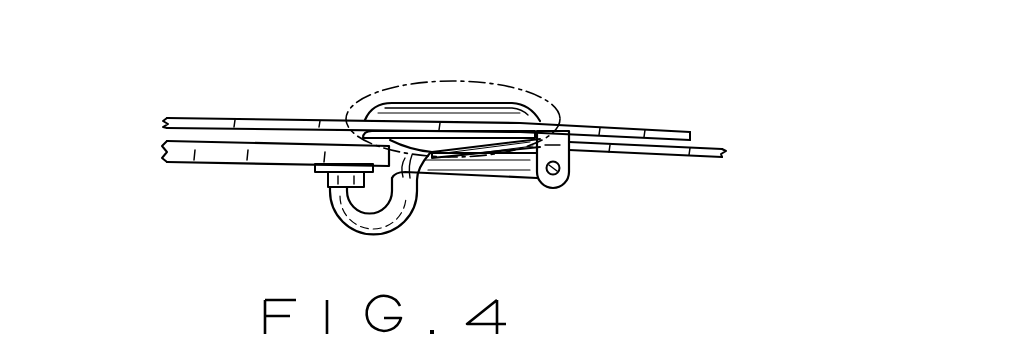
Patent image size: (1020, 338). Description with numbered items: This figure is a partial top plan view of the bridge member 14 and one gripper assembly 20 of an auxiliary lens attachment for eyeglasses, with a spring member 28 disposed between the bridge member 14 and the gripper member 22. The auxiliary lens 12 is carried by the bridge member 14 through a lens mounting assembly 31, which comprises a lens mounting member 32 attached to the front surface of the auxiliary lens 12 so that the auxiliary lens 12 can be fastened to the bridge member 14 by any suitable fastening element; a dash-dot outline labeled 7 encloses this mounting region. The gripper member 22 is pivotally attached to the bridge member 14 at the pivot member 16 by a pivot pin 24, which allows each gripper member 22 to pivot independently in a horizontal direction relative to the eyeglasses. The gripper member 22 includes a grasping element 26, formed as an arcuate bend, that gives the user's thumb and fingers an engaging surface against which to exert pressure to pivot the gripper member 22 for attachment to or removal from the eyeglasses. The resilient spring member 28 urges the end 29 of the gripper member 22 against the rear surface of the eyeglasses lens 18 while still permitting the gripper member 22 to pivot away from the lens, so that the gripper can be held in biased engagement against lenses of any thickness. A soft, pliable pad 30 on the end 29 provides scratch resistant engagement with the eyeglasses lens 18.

The detail region 7 is at (354, 96).
The auxiliary lens 12 is at (226, 118).
The bridge member 14 is at (727, 150).
The pivot member 16 is at (572, 157).
The lens of eyeglasses 18 is at (178, 155).
The gripper assembly 20 is at (502, 213).
The gripper member 22 is at (513, 170).
The pivot pin 24 is at (558, 167).
The grasping element 26 is at (375, 228).
The spring member 28 is at (525, 132).
The end of gripper member 29 is at (342, 191).
The pad 30 is at (316, 168).
The lens mounting assembly 31 is at (423, 67).
The lens mounting member 32 is at (468, 107).